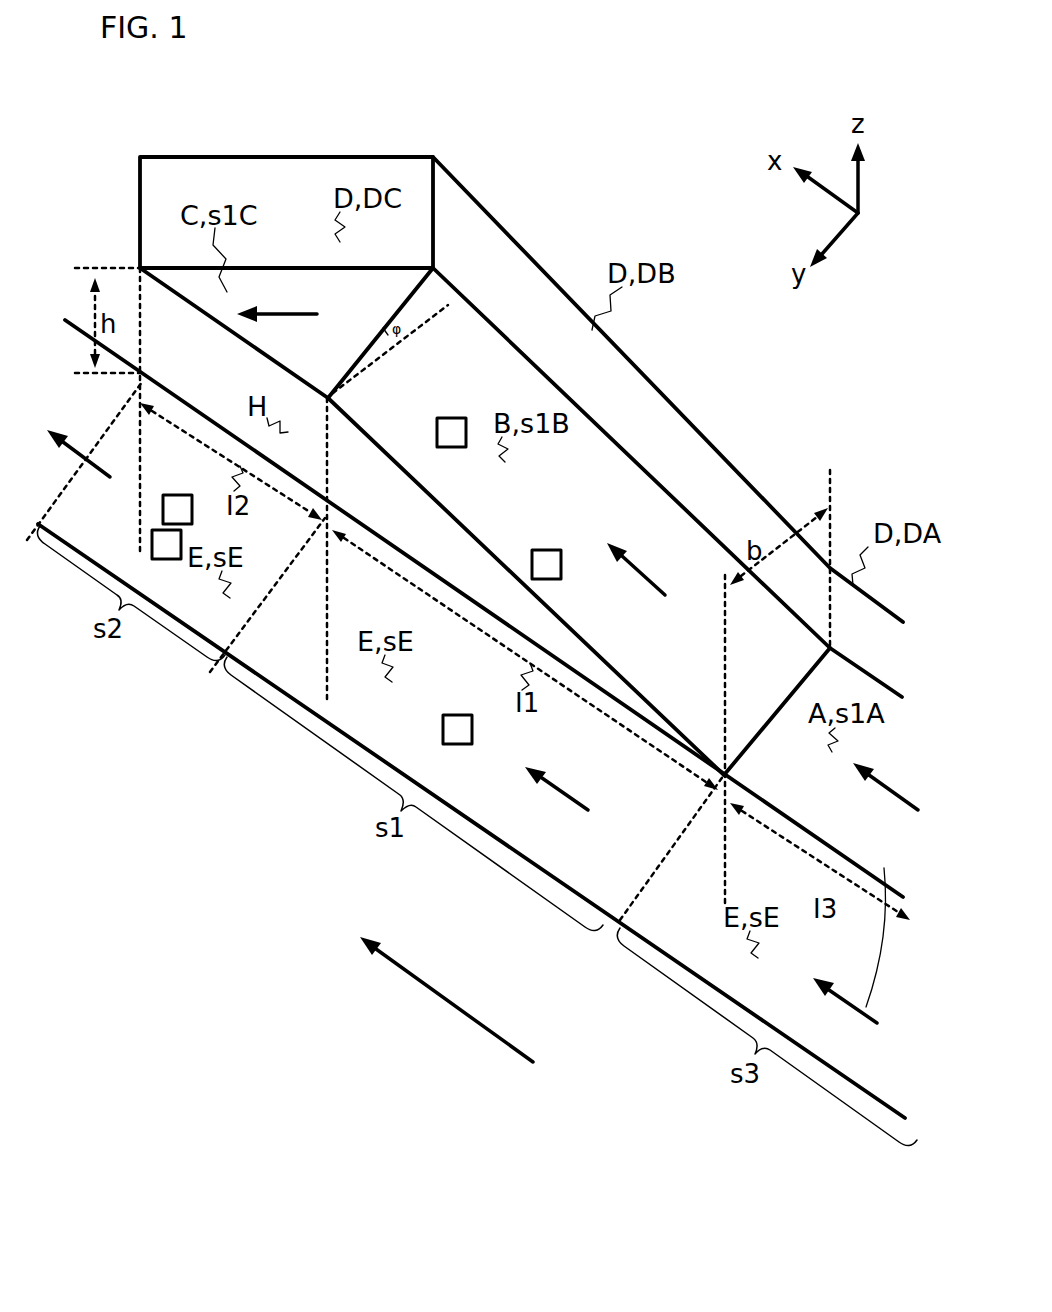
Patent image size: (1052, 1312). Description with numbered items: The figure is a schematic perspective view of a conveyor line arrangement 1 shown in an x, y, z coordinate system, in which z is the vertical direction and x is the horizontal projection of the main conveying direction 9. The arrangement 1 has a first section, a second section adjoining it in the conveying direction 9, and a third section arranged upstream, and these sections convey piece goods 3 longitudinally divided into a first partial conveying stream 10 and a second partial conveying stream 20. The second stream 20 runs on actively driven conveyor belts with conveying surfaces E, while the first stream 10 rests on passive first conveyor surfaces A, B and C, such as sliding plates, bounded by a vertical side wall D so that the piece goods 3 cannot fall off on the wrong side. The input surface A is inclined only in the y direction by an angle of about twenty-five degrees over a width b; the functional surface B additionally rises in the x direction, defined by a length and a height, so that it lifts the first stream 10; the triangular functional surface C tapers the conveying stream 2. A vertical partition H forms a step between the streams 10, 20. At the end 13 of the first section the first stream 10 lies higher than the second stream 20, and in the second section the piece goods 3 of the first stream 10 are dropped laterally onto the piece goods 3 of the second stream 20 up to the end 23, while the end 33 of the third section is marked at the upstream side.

The conveyor line arrangement 1 is at (471, 583).
The conveying stream 2 is at (472, 703).
The piece goods 3 is at (356, 551).
The conveying direction 9 is at (446, 992).
The first partial conveying stream 10 is at (577, 558).
The end of the first section 13 is at (380, 333).
The second partial conveying stream 20 is at (701, 897).
The end of the second section of the first partial conveyor flow 23 is at (234, 333).
The end of the third section 33 is at (777, 707).